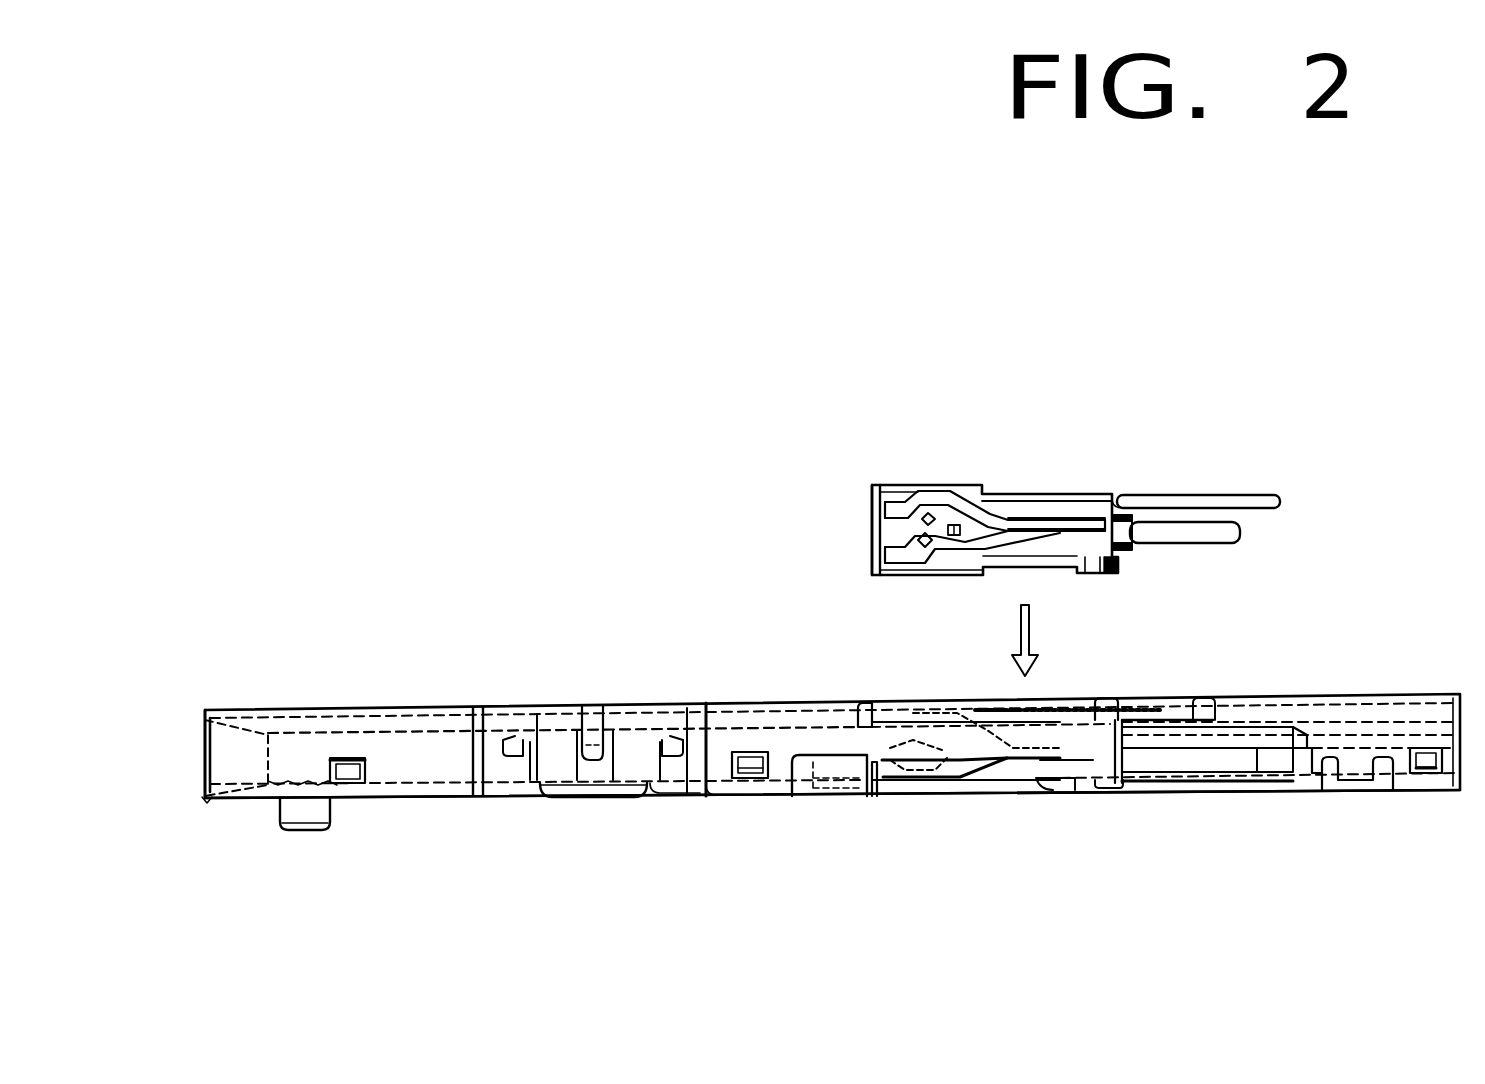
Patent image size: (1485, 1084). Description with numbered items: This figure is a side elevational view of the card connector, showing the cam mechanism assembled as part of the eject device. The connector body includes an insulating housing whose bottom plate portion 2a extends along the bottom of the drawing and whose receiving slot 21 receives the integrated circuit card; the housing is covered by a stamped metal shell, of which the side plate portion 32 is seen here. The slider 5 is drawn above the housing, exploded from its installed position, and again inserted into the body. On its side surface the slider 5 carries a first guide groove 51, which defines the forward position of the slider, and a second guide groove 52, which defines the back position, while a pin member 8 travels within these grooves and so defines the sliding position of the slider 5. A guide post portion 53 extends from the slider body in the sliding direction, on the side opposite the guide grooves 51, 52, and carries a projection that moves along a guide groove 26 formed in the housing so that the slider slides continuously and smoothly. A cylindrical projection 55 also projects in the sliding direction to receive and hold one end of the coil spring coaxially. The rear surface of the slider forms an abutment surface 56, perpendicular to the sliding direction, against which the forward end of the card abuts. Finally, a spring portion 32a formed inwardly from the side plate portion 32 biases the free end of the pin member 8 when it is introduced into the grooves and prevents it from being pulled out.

The bottom plate portion 2a is at (400, 787).
The slider 5 is at (1057, 494).
The pin member 8 is at (1210, 745).
The receiving slot 21 is at (217, 768).
The guide groove 26 is at (1053, 793).
The side plate portion 32 is at (830, 737).
The spring portion 32a is at (1119, 788).
The first guide groove 51 is at (968, 500).
The second guide groove 52 is at (988, 547).
The guide post portion 53 is at (1262, 496).
The cylindrical projection 55 is at (1177, 533).
The abutment surface 56 is at (872, 520).